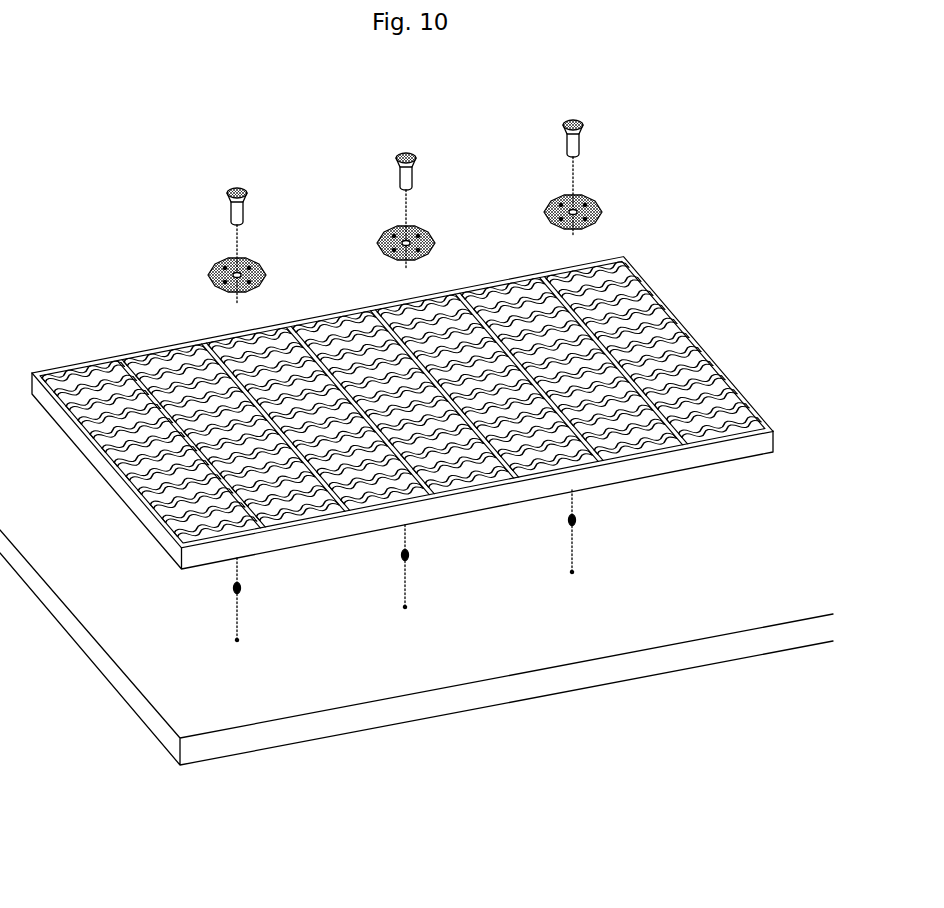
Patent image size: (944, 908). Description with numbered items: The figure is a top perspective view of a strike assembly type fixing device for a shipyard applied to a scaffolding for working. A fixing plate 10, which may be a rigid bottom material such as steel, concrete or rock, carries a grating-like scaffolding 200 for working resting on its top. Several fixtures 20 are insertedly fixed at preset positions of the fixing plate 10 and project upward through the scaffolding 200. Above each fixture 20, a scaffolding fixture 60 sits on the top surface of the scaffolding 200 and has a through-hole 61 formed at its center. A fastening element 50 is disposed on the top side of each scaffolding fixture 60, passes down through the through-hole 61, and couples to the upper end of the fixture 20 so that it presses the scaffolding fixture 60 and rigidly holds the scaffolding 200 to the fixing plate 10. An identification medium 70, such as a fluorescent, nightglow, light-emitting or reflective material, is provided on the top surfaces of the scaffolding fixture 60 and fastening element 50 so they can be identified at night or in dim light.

The fixing plate 10 is at (166, 736).
The fixture 20 is at (242, 588).
The fastening element 50 is at (245, 205).
The scaffolding fixture 60 is at (267, 277).
The through-hole 61 is at (242, 260).
The identification medium 70 is at (410, 198).
The scaffolding for working 200 is at (676, 311).